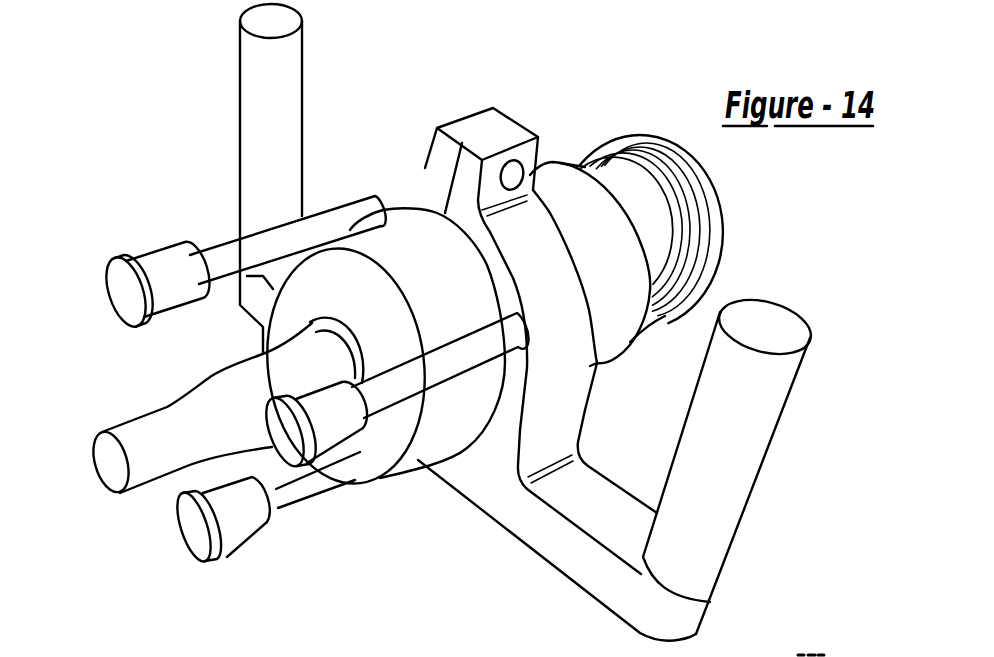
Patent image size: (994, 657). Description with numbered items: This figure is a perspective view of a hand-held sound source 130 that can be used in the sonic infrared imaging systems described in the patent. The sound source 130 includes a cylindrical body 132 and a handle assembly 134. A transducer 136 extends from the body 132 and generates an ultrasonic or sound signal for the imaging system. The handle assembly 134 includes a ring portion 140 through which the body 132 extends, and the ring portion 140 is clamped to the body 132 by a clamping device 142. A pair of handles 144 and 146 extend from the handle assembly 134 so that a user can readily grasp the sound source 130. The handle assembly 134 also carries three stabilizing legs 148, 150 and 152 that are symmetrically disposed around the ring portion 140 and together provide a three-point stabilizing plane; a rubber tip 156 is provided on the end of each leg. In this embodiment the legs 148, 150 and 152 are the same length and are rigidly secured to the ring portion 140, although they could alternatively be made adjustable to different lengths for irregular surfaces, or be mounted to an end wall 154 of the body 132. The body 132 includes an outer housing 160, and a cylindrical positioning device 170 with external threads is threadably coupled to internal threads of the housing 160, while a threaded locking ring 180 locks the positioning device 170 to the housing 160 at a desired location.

The sound source 130 is at (502, 72).
The cylindrical body 132 is at (596, 358).
The handle assembly 134 is at (539, 333).
The transducer 136 is at (105, 467).
The ring portion 140 is at (548, 402).
The clamping device 142 is at (487, 140).
The handle 144 is at (270, 118).
The handle 146 is at (735, 465).
The stabilizing leg 148 is at (222, 257).
The stabilizing leg 150 is at (448, 358).
The stabilizing leg 152 is at (293, 488).
The end wall 154 is at (343, 297).
The rubber tip 156 is at (193, 523).
The outer housing 160 is at (615, 305).
The cylindrical positioning device 170 is at (673, 217).
The threaded locking ring 180 is at (563, 170).